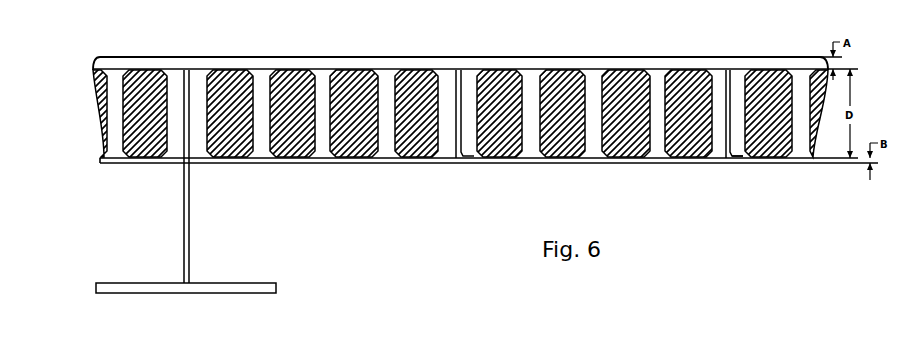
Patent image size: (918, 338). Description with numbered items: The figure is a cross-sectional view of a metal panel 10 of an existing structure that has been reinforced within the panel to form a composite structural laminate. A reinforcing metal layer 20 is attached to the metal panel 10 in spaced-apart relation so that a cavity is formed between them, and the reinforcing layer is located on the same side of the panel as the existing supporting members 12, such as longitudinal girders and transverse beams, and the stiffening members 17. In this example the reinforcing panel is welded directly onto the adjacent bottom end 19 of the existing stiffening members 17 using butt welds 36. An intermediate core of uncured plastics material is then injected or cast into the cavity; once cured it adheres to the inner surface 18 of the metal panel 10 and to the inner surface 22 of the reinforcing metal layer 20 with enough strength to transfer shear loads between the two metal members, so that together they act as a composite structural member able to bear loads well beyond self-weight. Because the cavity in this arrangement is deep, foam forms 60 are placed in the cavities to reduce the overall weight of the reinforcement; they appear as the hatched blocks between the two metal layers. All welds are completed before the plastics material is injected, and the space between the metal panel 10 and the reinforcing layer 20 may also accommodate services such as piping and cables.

The metal panel 10 is at (109, 60).
The inner surface of the metal panel 18 is at (595, 69).
The foam forms 60 is at (96, 82).
The reinforcing metal layer 20 is at (104, 160).
The inner surface of the reinforcing metal layer 22 is at (325, 161).
The butt welds 36 is at (462, 159).
The bottom end of the stiffening members 19 is at (722, 161).
The stiffening members 17 is at (737, 157).
The supporting members 12 is at (189, 228).